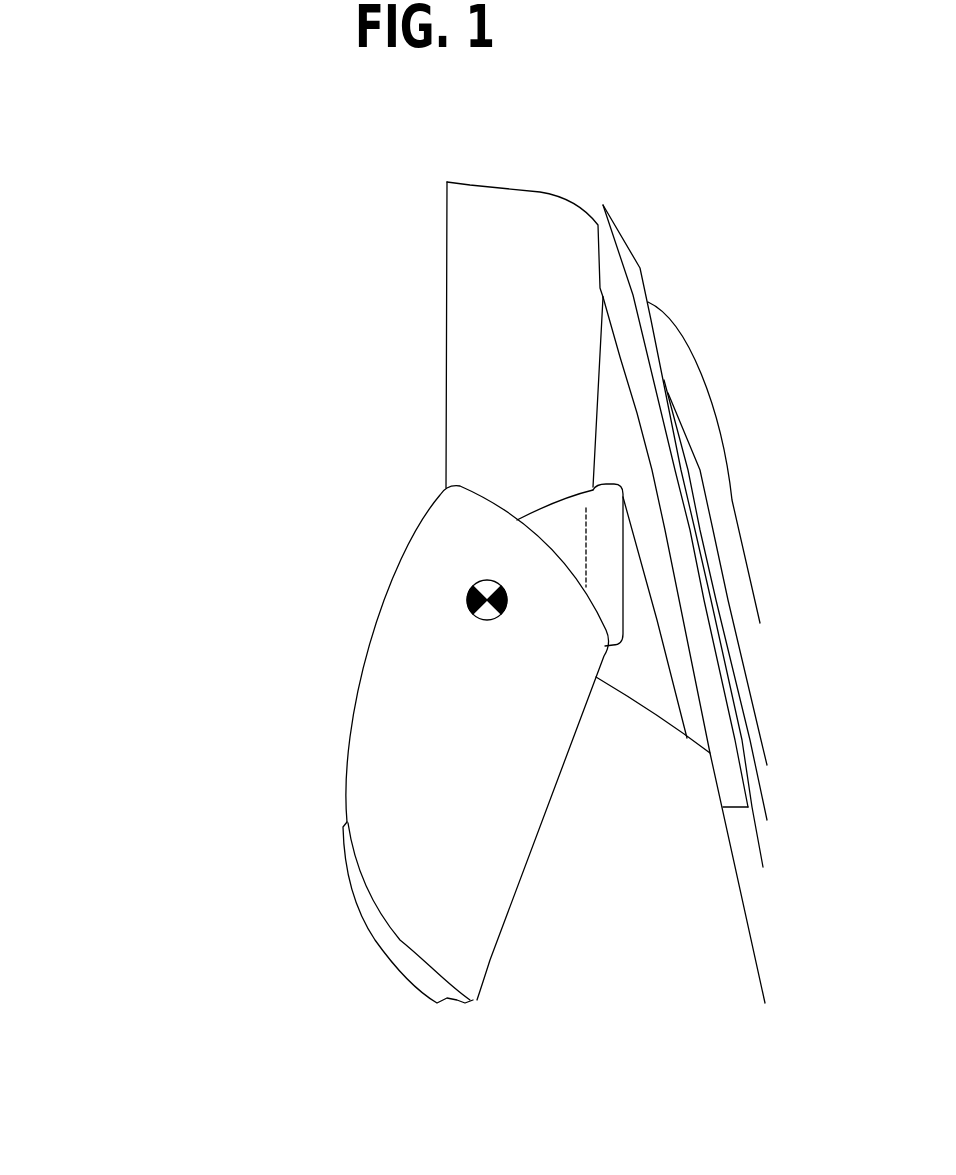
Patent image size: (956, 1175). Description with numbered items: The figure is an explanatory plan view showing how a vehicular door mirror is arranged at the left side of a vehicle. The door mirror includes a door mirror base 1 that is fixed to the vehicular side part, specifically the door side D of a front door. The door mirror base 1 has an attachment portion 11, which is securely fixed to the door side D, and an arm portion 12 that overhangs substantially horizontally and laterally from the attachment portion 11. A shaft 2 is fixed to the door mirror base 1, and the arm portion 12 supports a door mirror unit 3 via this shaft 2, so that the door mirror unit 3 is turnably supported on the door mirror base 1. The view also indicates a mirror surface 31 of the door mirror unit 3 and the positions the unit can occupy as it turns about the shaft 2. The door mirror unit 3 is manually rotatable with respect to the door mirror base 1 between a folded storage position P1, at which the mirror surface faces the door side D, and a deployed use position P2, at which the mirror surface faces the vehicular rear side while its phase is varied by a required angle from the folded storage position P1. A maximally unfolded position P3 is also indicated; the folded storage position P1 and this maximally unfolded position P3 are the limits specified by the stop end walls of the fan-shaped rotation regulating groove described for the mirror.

The door side D is at (440, 302).
The door mirror base 1 is at (600, 322).
The attachment portion 11 is at (613, 422).
The arm portion 12 is at (577, 537).
The shaft 2 is at (463, 602).
The door mirror unit 3 is at (367, 917).
The mirror surface 31 is at (427, 940).
The folded storage position P1 is at (488, 630).
The deployed use position P2 is at (473, 620).
The maximally unfolded position P3 is at (465, 602).